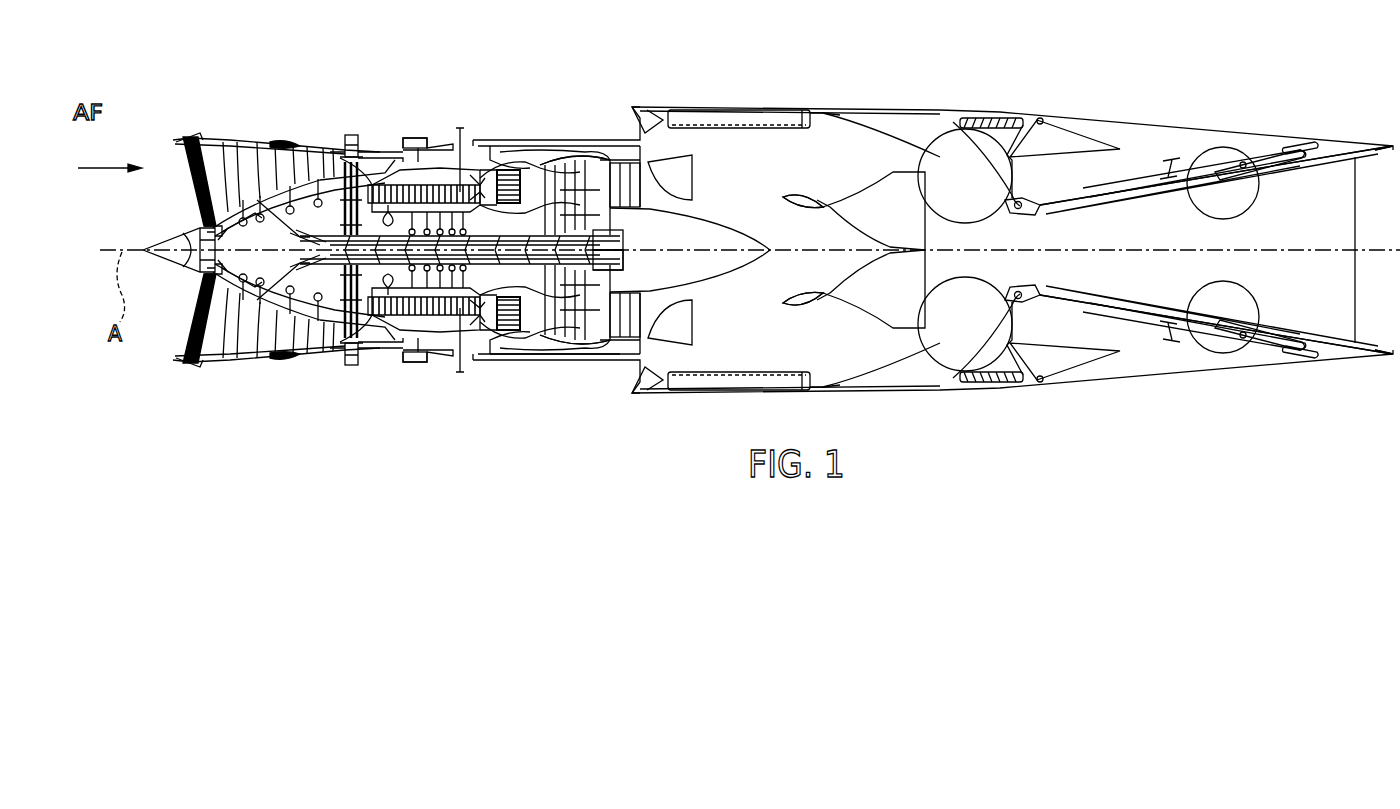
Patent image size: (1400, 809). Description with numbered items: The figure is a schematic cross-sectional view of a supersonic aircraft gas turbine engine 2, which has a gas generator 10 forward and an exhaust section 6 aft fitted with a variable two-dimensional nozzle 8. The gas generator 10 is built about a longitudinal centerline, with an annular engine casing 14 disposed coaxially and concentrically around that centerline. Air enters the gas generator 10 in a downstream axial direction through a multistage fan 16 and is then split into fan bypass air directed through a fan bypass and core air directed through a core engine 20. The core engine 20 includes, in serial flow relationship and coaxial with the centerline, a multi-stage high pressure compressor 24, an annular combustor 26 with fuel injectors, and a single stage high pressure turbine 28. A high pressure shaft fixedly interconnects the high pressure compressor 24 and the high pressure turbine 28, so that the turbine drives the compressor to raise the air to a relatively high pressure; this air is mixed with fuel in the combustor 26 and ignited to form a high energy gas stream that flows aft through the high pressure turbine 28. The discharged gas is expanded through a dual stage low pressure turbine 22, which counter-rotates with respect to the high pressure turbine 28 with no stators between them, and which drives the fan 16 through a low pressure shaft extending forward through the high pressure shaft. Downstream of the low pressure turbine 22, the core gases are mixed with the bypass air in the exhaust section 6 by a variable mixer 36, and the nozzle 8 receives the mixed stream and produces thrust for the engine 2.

The supersonic aircraft gas turbine engine 2 is at (332, 447).
The exhaust section 6 is at (908, 128).
The variable 2-D nozzle 8 is at (1127, 173).
The gas generator 10 is at (407, 122).
The annular engine casing 14 is at (297, 143).
The multistage fan 16 is at (252, 140).
The core engine 20 is at (470, 130).
The dual stage low pressure turbine 22 is at (602, 370).
The multi-stage high pressure compressor 24 is at (450, 143).
The annular combustor 26 is at (518, 370).
The single stage high pressure turbine 28 is at (577, 150).
The variable mixer 36 is at (792, 190).